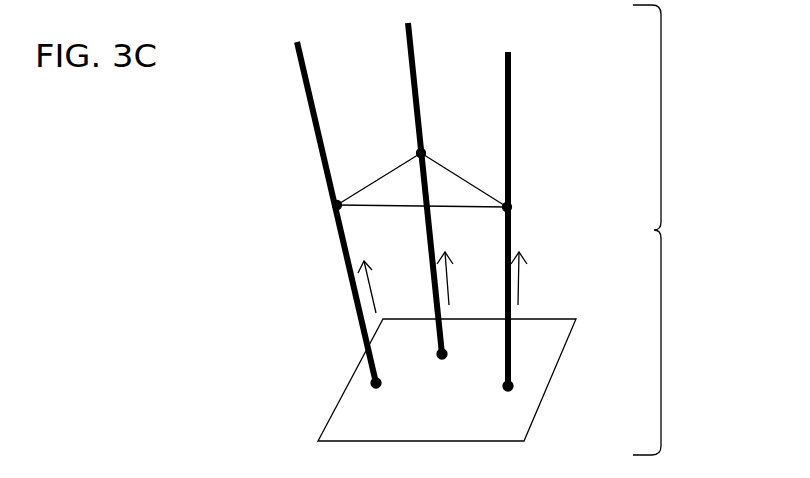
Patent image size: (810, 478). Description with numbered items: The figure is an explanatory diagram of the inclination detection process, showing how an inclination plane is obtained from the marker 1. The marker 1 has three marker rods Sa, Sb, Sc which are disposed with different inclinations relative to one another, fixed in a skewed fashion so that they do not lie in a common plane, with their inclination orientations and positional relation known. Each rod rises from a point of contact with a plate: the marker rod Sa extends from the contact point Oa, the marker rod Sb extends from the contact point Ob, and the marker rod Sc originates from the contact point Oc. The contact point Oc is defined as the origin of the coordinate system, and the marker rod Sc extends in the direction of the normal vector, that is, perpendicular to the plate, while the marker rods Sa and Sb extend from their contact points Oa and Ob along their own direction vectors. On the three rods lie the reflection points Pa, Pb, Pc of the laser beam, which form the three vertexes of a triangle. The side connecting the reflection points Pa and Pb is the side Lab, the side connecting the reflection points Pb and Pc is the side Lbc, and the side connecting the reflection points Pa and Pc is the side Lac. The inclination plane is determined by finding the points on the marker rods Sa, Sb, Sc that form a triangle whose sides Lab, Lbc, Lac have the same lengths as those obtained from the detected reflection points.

The marker 1 is at (655, 230).
The marker rod Sa is at (330, 199).
The marker rod Sb is at (417, 177).
The marker rod Sc is at (508, 205).
The contact point Oa is at (373, 396).
The contact point Ob is at (445, 366).
The contact point Oc is at (522, 378).
The reflection point Pa is at (313, 208).
The reflection point Pb is at (434, 141).
The reflection point Pc is at (521, 215).
The side of triangle Lab is at (379, 179).
The side of triangle Lbc is at (464, 180).
The side of triangle Lac is at (422, 218).